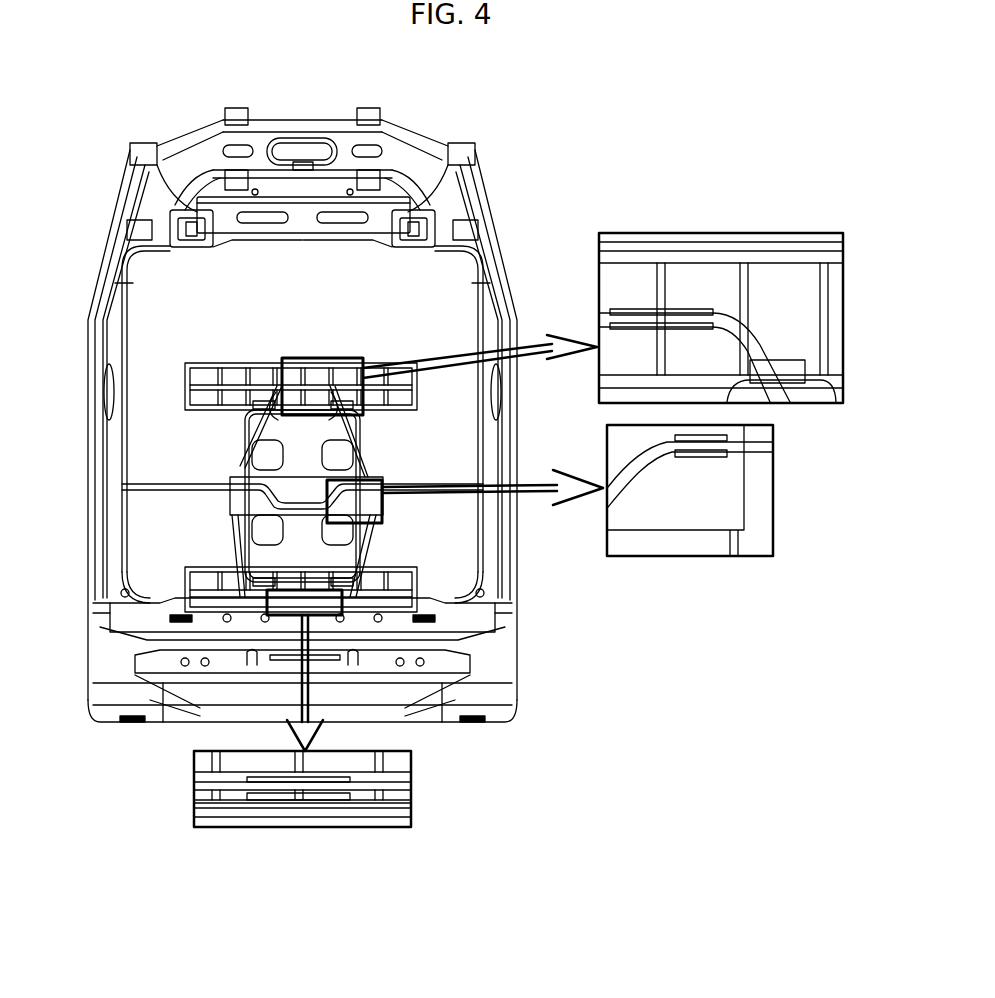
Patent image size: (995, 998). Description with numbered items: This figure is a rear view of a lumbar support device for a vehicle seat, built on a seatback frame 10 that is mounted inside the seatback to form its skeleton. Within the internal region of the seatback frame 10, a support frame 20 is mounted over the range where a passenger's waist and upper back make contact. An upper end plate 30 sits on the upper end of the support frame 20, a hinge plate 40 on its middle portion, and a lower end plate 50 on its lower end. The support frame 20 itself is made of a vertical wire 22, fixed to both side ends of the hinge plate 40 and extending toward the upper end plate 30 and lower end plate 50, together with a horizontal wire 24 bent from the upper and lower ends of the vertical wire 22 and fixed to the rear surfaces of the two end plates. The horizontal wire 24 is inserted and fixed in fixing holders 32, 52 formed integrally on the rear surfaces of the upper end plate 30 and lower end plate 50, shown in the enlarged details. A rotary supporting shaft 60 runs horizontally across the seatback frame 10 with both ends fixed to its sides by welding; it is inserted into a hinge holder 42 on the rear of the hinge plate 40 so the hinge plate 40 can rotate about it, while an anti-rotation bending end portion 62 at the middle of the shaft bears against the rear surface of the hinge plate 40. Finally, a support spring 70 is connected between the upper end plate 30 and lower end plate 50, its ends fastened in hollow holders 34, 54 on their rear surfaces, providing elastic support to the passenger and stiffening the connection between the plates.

The seatback frame 10 is at (485, 255).
The support frame 20 is at (375, 449).
The vertical wire 22 is at (485, 502).
The horizontal wire 24 is at (336, 385).
The upper end plate 30 is at (227, 378).
The fixing holder 32 is at (678, 310).
The hollow holder 34 is at (786, 363).
The hinge plate 40 is at (245, 500).
The hinge holder 42 is at (697, 455).
The lower end plate 50 is at (203, 585).
The fixing holder 52 is at (331, 795).
The hollow holder 54 is at (455, 627).
The rotary supporting shaft 60 is at (155, 494).
The anti-rotation bending end portion 62 is at (305, 503).
The support spring 70 is at (282, 455).